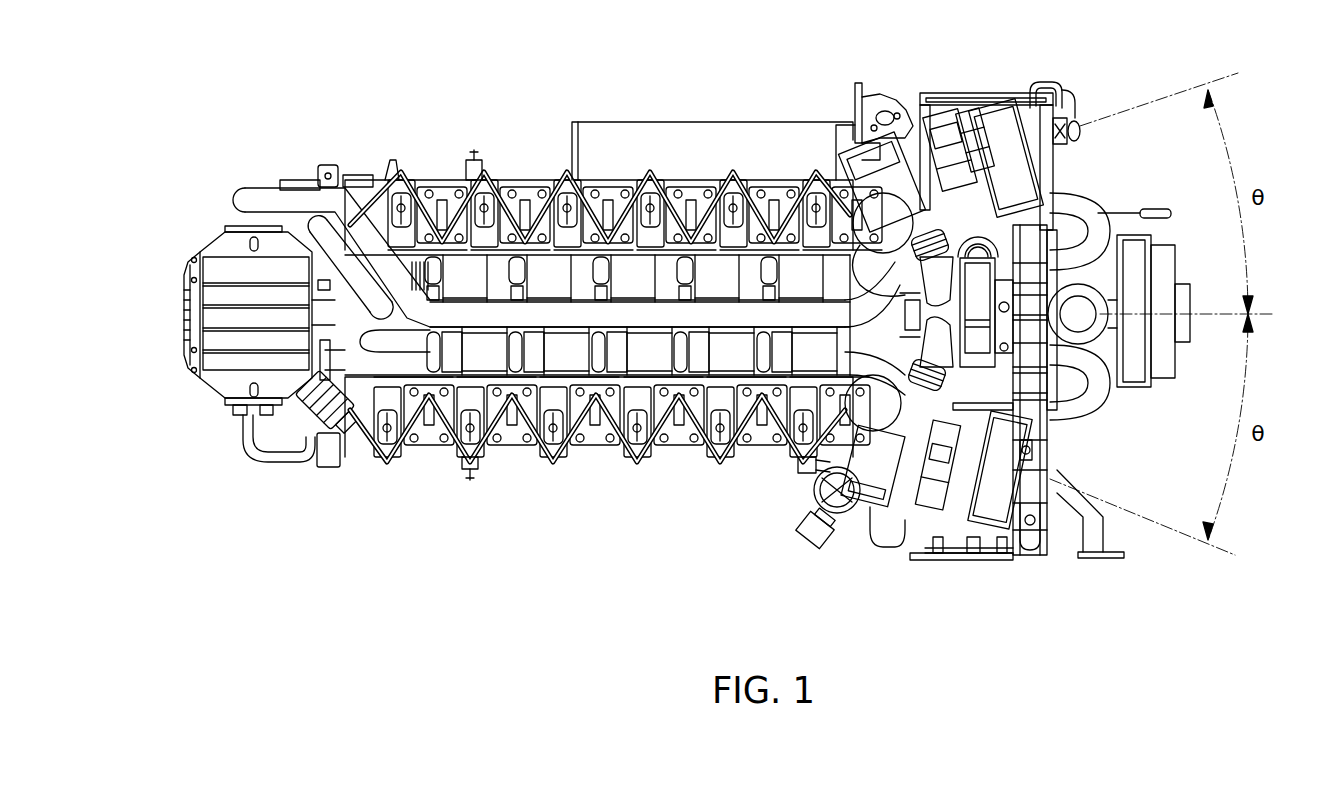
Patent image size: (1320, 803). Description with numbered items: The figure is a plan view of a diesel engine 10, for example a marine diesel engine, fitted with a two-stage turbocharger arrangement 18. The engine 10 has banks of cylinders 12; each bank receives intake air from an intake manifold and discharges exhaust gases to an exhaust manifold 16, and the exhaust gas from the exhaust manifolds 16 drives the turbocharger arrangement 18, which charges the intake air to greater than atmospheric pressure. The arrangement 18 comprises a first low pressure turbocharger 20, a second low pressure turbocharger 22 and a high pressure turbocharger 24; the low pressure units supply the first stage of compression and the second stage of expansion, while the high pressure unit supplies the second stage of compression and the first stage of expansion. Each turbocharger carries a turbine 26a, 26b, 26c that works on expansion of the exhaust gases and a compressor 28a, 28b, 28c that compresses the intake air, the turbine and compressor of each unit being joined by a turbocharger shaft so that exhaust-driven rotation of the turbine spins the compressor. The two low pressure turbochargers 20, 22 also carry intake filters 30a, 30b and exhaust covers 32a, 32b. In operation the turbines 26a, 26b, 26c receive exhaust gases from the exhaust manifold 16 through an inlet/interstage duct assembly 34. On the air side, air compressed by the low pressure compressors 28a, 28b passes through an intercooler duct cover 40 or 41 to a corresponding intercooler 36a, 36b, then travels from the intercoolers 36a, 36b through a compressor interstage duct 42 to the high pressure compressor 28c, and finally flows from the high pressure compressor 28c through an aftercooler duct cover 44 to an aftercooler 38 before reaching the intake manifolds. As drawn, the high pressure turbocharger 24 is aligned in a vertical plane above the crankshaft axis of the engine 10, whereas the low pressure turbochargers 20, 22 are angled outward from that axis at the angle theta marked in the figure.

The diesel engine 10 is at (295, 80).
The banks of cylinders 12 is at (490, 156).
The exhaust manifold 16 is at (565, 352).
The two-stage turbocharger arrangement 18 is at (966, 80).
The first low pressure turbocharger 20 is at (1062, 130).
The second low pressure turbocharger 22 is at (1092, 500).
The high pressure turbocharger 24 is at (1085, 258).
The turbine 26a is at (895, 92).
The turbine 26b is at (842, 545).
The turbine 26c is at (1045, 450).
The compressor 28a is at (936, 125).
The compressor 28b is at (905, 540).
The compressor 28c is at (1180, 292).
The intake filter 30a is at (1030, 100).
The intake filter 30b is at (962, 558).
The exhaust cover 32a is at (843, 137).
The exhaust cover 32b is at (805, 470).
The inlet/interstage duct assembly 34 is at (770, 185).
The intercooler 36a is at (1068, 95).
The intercooler 36b is at (1030, 540).
The aftercooler 38 is at (1090, 385).
The intercooler duct cover 40 is at (976, 105).
The intercooler duct cover 41 is at (990, 567).
The compressor interstage duct 42 is at (1085, 350).
The aftercooler duct cover 44 is at (1062, 372).